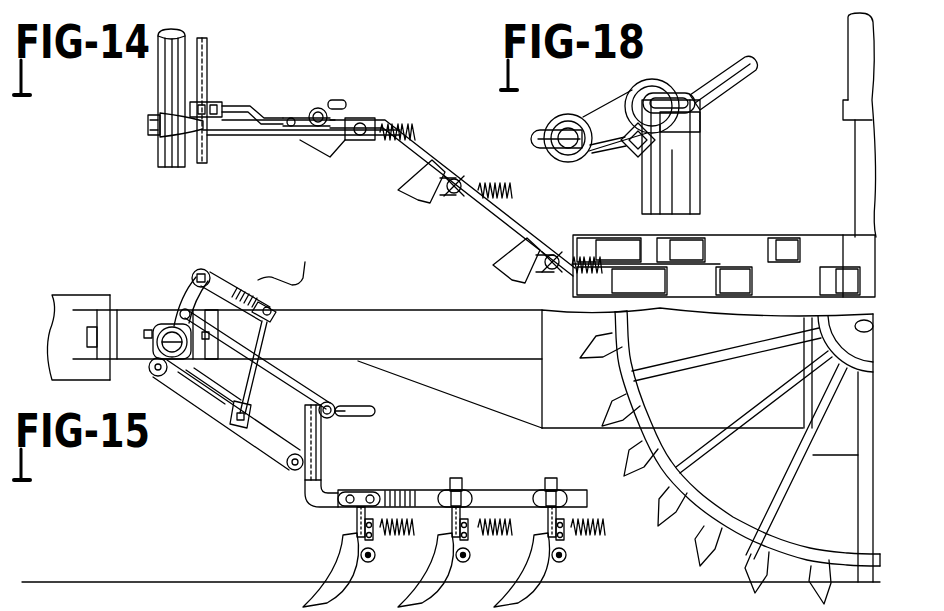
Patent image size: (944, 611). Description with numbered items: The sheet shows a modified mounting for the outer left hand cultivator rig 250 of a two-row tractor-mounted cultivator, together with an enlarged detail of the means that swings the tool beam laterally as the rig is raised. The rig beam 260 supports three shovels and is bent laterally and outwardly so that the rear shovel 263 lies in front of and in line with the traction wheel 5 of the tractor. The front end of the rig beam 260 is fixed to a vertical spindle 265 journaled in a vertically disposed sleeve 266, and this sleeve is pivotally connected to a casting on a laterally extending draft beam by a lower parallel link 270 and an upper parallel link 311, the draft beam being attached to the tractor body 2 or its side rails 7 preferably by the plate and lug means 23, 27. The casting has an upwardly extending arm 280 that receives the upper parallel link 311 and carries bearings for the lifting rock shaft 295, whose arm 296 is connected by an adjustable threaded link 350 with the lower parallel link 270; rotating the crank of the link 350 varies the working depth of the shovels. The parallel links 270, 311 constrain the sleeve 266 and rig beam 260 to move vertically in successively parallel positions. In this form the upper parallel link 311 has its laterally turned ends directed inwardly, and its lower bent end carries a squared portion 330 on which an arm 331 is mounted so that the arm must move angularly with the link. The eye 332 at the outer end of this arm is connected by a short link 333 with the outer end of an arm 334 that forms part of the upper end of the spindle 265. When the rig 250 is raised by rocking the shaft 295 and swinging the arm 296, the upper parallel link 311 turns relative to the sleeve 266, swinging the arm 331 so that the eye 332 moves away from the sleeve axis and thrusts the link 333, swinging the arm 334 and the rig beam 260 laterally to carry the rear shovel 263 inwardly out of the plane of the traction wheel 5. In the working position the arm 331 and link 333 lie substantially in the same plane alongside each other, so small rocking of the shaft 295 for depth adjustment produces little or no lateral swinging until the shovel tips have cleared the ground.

In FIG. 15, the tractor body 2 is at (450, 388).
In FIG. 14, the traction wheel 5 is at (721, 252).
In FIG. 15, the traction wheel 5 is at (711, 517).
In FIG. 15, the side rails 7 is at (378, 293).
In FIG. 15, the plate means 23 is at (173, 306).
In FIG. 15, the lug means 27 is at (132, 309).
In FIG. 14, the cultivator rig 250 is at (440, 152).
In FIG. 15, the cultivator rig 250 is at (508, 482).
In FIG. 14, the rig beam 260 is at (442, 166).
In FIG. 15, the rig beam 260 is at (425, 494).
In FIG. 14, the rear shovel 263 is at (506, 263).
In FIG. 15, the rear shovel 263 is at (538, 552).
In FIG. 15, the vertical spindle 265 is at (311, 494).
In FIG. 18, the sleeve 266 is at (678, 194).
In FIG. 15, the sleeve 266 is at (318, 478).
In FIG. 15, the lower parallel link 270 is at (205, 412).
In FIG. 15, the upwardly extending arm 280 is at (189, 300).
In FIG. 14, the lifting rock shaft 295 is at (203, 93).
In FIG. 15, the lifting rock shaft 295 is at (211, 275).
In FIG. 15, the arm 296 is at (231, 292).
In FIG. 18, the upper parallel link 311 is at (713, 78).
In FIG. 15, the upper parallel link 311 is at (255, 385).
In FIG. 18, the squared portion 330 is at (629, 153).
In FIG. 18, the arm 331 is at (606, 145).
In FIG. 15, the arm 331 is at (345, 418).
In FIG. 18, the eye 332 is at (550, 146).
In FIG. 14, the link 333 is at (334, 101).
In FIG. 18, the link 333 is at (612, 104).
In FIG. 15, the link 333 is at (322, 406).
In FIG. 14, the arm 334 is at (286, 120).
In FIG. 18, the arm 334 is at (673, 95).
In FIG. 15, the adjustable link 350 is at (262, 340).